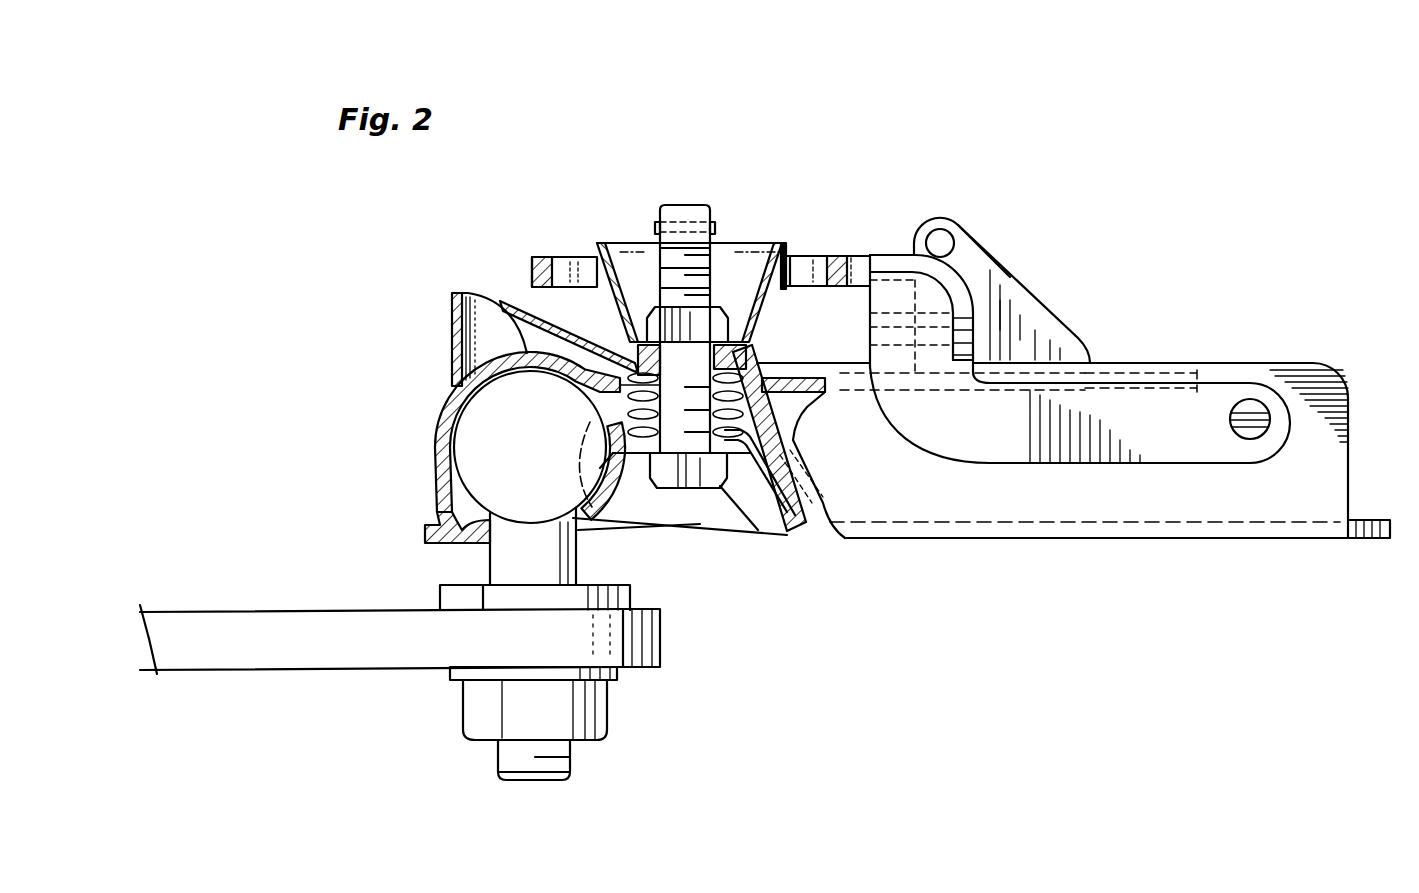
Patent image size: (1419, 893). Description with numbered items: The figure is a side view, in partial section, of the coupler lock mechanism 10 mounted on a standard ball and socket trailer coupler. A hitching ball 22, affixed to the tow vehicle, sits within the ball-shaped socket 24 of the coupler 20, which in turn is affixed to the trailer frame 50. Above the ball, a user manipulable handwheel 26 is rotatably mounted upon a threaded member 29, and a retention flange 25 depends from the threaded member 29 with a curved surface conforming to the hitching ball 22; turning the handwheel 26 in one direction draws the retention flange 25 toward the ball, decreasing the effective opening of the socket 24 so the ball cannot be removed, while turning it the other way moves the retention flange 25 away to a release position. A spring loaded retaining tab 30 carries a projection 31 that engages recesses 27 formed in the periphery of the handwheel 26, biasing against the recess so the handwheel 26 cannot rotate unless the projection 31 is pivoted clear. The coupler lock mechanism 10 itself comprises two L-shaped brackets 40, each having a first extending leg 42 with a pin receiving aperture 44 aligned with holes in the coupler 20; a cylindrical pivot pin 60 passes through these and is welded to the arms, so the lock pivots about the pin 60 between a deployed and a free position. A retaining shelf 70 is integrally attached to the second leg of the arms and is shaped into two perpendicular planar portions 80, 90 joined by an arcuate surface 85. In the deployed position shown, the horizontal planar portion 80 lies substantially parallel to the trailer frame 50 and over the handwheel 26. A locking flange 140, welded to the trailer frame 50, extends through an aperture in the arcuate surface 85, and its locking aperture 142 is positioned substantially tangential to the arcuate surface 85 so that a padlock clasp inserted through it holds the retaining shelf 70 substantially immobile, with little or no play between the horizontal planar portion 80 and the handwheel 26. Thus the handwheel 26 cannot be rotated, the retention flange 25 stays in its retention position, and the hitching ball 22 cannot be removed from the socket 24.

The coupler lock mechanism 10 is at (520, 246).
The coupler 20 is at (423, 406).
The hitching ball 22 is at (400, 575).
The socket 24 is at (440, 472).
The retention flange 25 is at (637, 493).
The handwheel 26 is at (738, 244).
The recesses 27 is at (640, 340).
The threaded member 29 is at (745, 497).
The retaining tab 30 is at (505, 318).
The projection 31 is at (627, 336).
The L-shaped bracket 40 is at (1000, 465).
The first extending leg 42 is at (1207, 405).
The pin receiving aperture 44 is at (1250, 440).
The trailer frame 50 is at (1127, 510).
The pivot pin 60 is at (1258, 413).
The retaining shelf 70 is at (869, 259).
The horizontal planar portion 80 is at (835, 258).
The arcuate surface 85 is at (955, 270).
The planar portion 90 is at (972, 333).
The locking flange 140 is at (1005, 292).
The locking aperture 142 is at (943, 232).